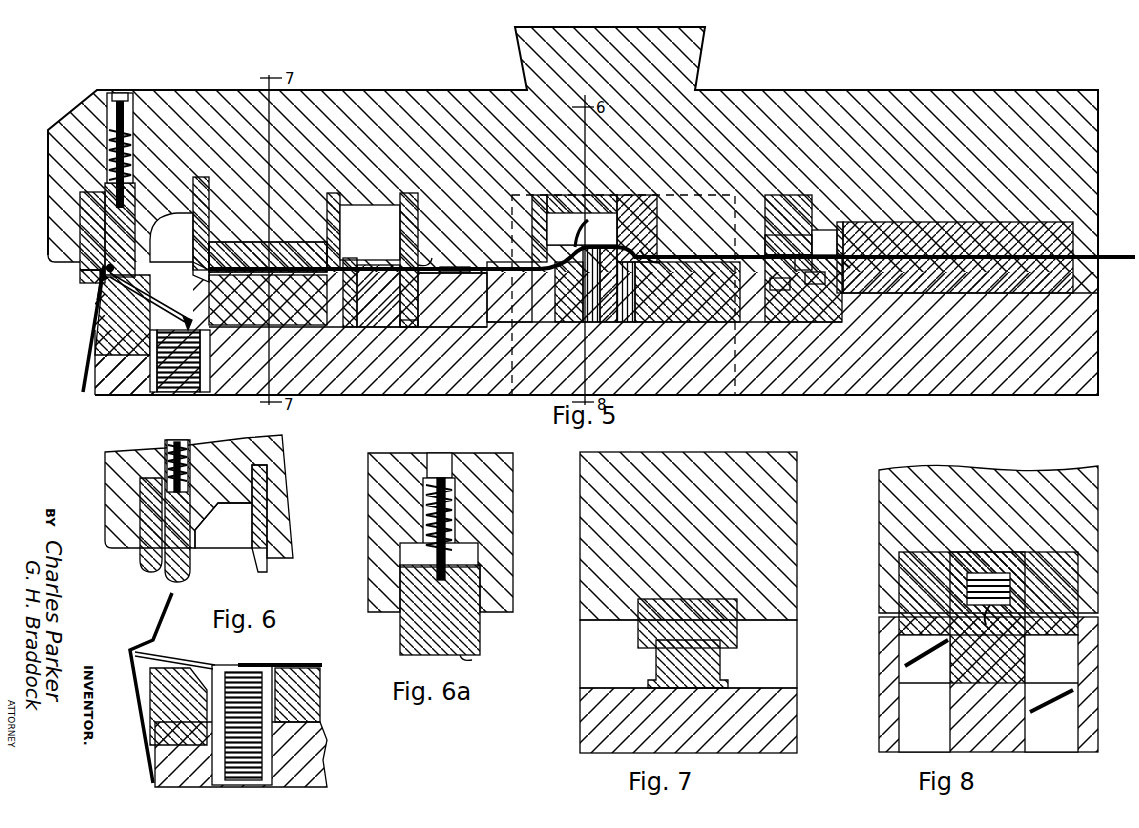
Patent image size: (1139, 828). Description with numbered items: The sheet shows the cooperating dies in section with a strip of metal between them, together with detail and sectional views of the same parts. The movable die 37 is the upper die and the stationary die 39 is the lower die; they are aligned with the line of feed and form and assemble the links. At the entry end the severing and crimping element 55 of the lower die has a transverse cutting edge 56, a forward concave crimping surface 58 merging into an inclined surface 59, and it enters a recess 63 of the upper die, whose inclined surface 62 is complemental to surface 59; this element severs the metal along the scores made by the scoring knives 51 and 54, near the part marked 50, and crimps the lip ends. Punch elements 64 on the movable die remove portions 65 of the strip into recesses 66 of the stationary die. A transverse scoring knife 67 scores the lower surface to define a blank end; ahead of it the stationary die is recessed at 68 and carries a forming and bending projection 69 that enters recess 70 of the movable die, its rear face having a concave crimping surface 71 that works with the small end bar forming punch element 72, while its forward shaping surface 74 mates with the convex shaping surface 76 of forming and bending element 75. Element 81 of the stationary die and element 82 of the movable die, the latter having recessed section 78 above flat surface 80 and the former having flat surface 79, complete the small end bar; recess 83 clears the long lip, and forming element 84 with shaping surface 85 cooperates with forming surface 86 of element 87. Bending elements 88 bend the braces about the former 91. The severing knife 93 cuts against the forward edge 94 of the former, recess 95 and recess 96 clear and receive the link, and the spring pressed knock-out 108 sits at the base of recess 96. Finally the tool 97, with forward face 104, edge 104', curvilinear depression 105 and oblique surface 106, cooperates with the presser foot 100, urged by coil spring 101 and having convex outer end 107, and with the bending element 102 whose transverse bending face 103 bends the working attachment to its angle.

In FIG. 5, the movable die 37 is at (880, 103).
In FIG. 6, the movable die 37 is at (270, 447).
In FIG. 6A, the movable die 37 is at (500, 507).
In FIG. 7, the movable die 37 is at (782, 512).
In FIG. 8, the movable die 37 is at (895, 507).
In FIG. 5, the stationary die 39 is at (945, 390).
In FIG. 6, the stationary die 39 is at (320, 760).
In FIG. 7, the stationary die 39 is at (588, 724).
In FIG. 8, the stationary die 39 is at (882, 717).
In FIG. 5, the rod 50 is at (847, 248).
In FIG. 5, the scoring knife 51 is at (855, 270).
In FIG. 5, the scoring knife 54 is at (803, 258).
In FIG. 5, the severing and crimping element 55 is at (815, 281).
In FIG. 5, the transverse cutting edge 56 is at (822, 232).
In FIG. 5, the forward concave crimping surface 58 is at (801, 267).
In FIG. 5, the inclined surface 59 is at (781, 288).
In FIG. 5, the inclined surface 62 is at (788, 239).
In FIG. 5, the recess 63 is at (842, 225).
In FIG. 5, the punch elements 64 is at (520, 245).
In FIG. 8, the punch elements 64 is at (1052, 556).
In FIG. 8, the removed portions 65 is at (925, 652).
In FIG. 5, the recesses 66 is at (708, 392).
In FIG. 8, the recesses 66 is at (988, 693).
In FIG. 5, the transverse scoring knife 67 is at (658, 258).
In FIG. 5, the recess 68 is at (687, 292).
In FIG. 5, the forming and bending projection 69 is at (588, 218).
In FIG. 8, the forming and bending projection 69 is at (991, 623).
In FIG. 5, the recess 70 is at (608, 215).
In FIG. 8, the recess 70 is at (988, 571).
In FIG. 5, the concave crimping surface 71 is at (625, 250).
In FIG. 5, the small end bar forming punch element 72 is at (640, 222).
In FIG. 5, the shaping surface 74 is at (560, 285).
In FIG. 5, the forming and bending element 75 is at (539, 195).
In FIG. 5, the convex shaping surface 76 is at (530, 232).
In FIG. 5, the recessed section 78 is at (430, 262).
In FIG. 5, the flat surface 79 is at (462, 268).
In FIG. 5, the flat surface 80 is at (458, 266).
In FIG. 5, the element of the stationary die 81 is at (408, 328).
In FIG. 5, the element of the movable die 82 is at (408, 193).
In FIG. 5, the recess 83 is at (366, 215).
In FIG. 5, the forming element 84 is at (333, 193).
In FIG. 5, the shaping surface 85 is at (268, 243).
In FIG. 5, the forming surface 86 is at (352, 262).
In FIG. 5, the element of the stationary die 87 is at (360, 327).
In FIG. 5, the bending elements 88 is at (308, 262).
In FIG. 7, the bending elements 88 is at (645, 630).
In FIG. 5, the former 91 is at (266, 320).
In FIG. 6, the former 91 is at (300, 692).
In FIG. 7, the former 91 is at (700, 667).
In FIG. 5, the cutting or severing knife 93 is at (200, 180).
In FIG. 6, the cutting or severing knife 93 is at (267, 520).
In FIG. 5, the forward edge 94 is at (200, 282).
In FIG. 5, the recess 95 is at (171, 237).
In FIG. 6, the recess 95 is at (223, 525).
In FIG. 5, the recess 96 is at (183, 318).
In FIG. 6, the recess 96 is at (330, 652).
In FIG. 5, the tool 97 is at (92, 331).
In FIG. 6, the tool 97 is at (214, 660).
In FIG. 5, the presser foot 100 is at (128, 215).
In FIG. 6, the presser foot 100 is at (190, 560).
In FIG. 6A, the presser foot 100 is at (470, 588).
In FIG. 5, the coil spring 101 is at (132, 152).
In FIG. 6A, the coil spring 101 is at (452, 515).
In FIG. 5, the bending element 102 is at (80, 217).
In FIG. 6, the bending element 102 is at (140, 505).
In FIG. 5, the transverse bending face 103 is at (100, 276).
In FIG. 5, the forward face 104 is at (75, 288).
In FIG. 5, the edge 104' is at (55, 265).
In FIG. 5, the transverse curvilinear depression 105 is at (140, 289).
In FIG. 5, the oblique surface 106 is at (100, 313).
In FIG. 5, the convex outer end 107 is at (104, 264).
In FIG. 6A, the convex outer end 107 is at (472, 660).
In FIG. 5, the spring pressed knock-out 108 is at (205, 392).
In FIG. 6, the spring pressed knock-out 108 is at (232, 665).